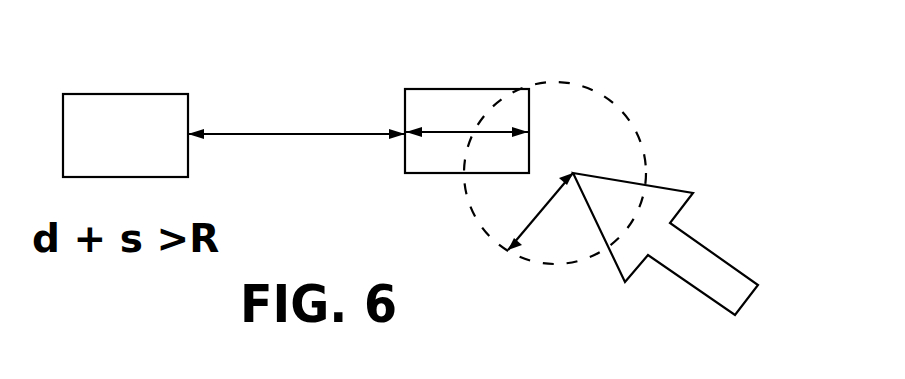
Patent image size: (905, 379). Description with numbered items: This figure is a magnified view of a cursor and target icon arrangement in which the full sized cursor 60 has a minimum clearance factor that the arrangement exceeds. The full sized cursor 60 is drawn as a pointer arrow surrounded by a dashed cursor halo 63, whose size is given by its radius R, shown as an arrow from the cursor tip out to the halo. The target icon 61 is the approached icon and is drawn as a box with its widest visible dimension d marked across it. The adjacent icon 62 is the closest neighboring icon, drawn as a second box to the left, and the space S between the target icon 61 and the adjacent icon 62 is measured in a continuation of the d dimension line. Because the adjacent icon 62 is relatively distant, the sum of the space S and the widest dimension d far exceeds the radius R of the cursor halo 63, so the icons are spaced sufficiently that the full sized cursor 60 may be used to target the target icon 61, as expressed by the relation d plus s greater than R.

The cursor 60 is at (668, 203).
The target icon 61 is at (475, 88).
The adjacent icon 62 is at (127, 117).
The cursor halo 63 is at (615, 107).
The space S is at (286, 132).
The widest visible dimension d is at (440, 130).
The radius R is at (540, 213).